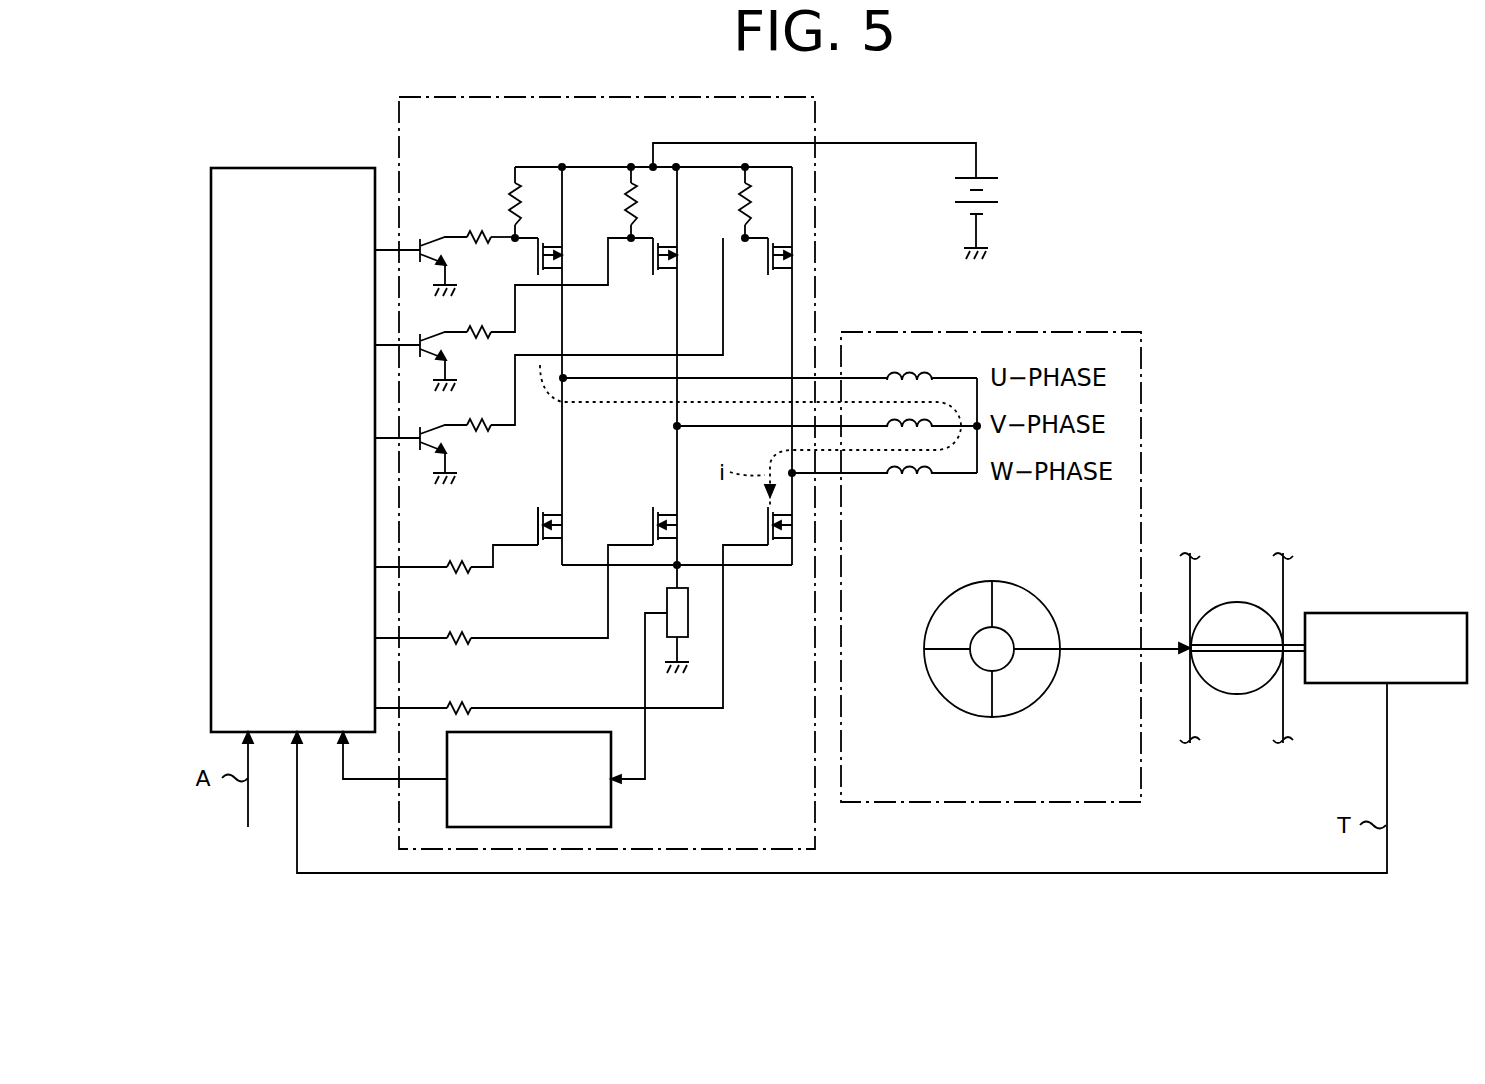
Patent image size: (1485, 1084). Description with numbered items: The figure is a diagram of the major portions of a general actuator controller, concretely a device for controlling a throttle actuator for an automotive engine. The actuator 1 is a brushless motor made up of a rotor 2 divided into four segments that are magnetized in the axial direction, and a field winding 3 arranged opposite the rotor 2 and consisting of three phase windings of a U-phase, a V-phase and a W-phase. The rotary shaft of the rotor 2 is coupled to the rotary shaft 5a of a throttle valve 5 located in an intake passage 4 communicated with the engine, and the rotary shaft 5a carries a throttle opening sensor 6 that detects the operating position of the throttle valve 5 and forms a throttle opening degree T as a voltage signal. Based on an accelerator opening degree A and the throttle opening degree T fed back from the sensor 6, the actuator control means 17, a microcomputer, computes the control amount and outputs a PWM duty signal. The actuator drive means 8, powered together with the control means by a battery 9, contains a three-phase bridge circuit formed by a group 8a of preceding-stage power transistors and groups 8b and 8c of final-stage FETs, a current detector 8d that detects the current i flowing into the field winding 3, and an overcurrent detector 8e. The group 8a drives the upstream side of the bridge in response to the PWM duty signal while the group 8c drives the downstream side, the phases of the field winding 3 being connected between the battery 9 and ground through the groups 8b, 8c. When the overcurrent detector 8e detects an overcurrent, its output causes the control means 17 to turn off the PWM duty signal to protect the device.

The throttle actuator 1 is at (1048, 332).
The rotor 2 is at (1003, 643).
The field winding 3 is at (910, 487).
The intake passage 4 is at (1188, 722).
The throttle valve 5 is at (1237, 600).
The rotary shaft 5a is at (1233, 650).
The throttle opening sensor 6 is at (1387, 612).
The actuator drive means 8 is at (468, 97).
The group of preceding-stage switching elements 8a is at (433, 238).
The group of final-stage switching elements 8b is at (663, 273).
The group of final-stage switching elements 8c is at (540, 523).
The current detector 8d is at (691, 610).
The overcurrent detector 8e is at (613, 800).
The battery 9 is at (1002, 188).
The actuator control means 17 is at (293, 167).